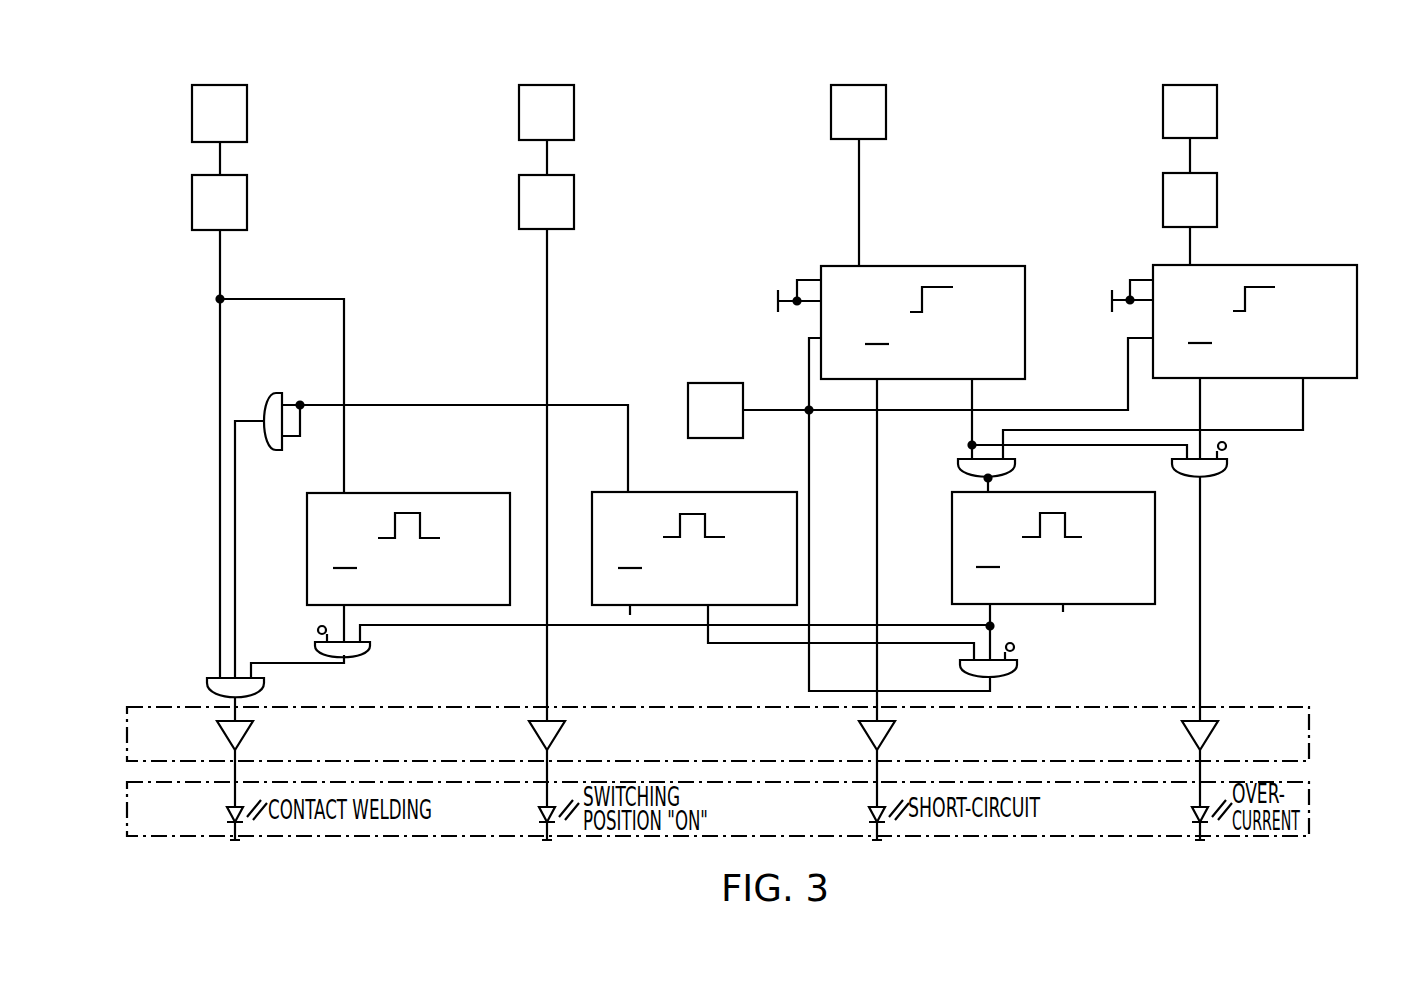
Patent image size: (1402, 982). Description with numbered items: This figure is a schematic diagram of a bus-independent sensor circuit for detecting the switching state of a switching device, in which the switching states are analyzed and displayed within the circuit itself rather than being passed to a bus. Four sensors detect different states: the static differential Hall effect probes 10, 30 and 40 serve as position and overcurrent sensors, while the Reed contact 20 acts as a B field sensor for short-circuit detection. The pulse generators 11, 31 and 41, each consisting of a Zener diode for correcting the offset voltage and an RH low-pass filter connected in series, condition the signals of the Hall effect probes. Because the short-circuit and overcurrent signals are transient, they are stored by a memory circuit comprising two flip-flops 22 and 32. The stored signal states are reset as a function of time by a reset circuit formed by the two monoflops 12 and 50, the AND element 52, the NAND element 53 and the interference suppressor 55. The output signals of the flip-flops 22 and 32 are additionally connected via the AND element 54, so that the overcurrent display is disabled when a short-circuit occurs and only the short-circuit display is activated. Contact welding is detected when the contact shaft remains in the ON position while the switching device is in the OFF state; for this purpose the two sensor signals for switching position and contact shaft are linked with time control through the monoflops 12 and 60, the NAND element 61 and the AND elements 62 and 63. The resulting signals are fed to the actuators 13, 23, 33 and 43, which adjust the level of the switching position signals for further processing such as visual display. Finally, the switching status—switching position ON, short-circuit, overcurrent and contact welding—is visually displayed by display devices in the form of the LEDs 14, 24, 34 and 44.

The static differential Hall effect probe 10 is at (574, 112).
The pulse generator 11 is at (574, 202).
The monoflop 12 is at (767, 492).
The actuator 13 is at (540, 741).
The LED 14 is at (538, 818).
The Reed contact 20 is at (886, 112).
The flip-flop 22 is at (932, 266).
The actuator 23 is at (865, 735).
The LED 24 is at (868, 818).
The static differential Hall effect probe 30 is at (1217, 111).
The pulse generator 31 is at (1217, 200).
The flip-flop 32 is at (1283, 265).
The actuator 33 is at (1188, 735).
The LED 34 is at (1190, 818).
The static differential Hall effect probe 40 is at (247, 113).
The pulse generator 41 is at (247, 203).
The actuator 43 is at (245, 740).
The LED 44 is at (228, 815).
The monoflop 50 is at (1155, 588).
The AND element 52 is at (1015, 672).
The NAND element 53 is at (1015, 470).
The AND element 54 is at (1227, 467).
The interference suppressor 55 is at (715, 383).
The monoflop 60 is at (395, 493).
The NAND element 61 is at (282, 393).
The AND element 62 is at (358, 655).
The AND element 63 is at (212, 678).